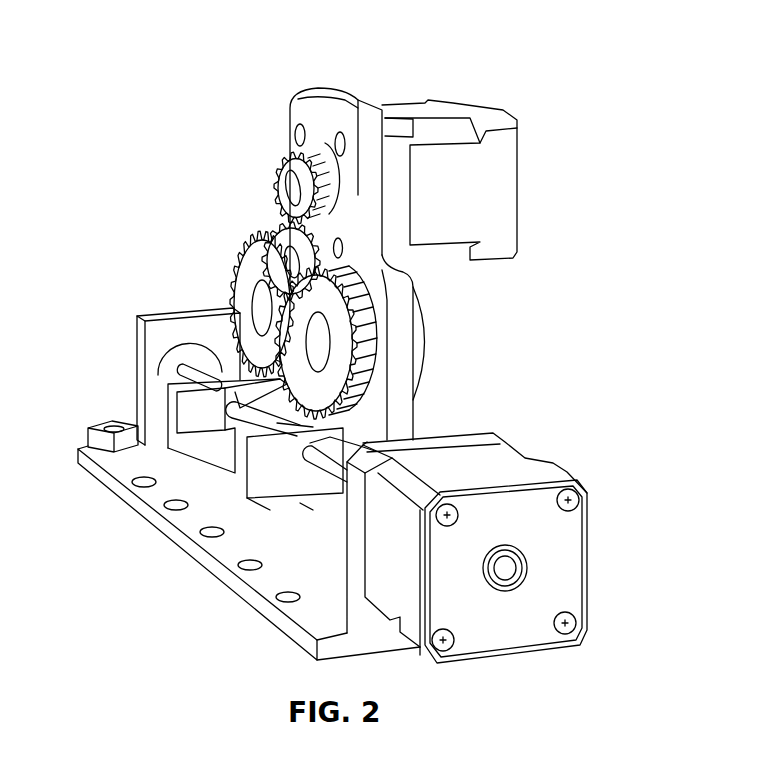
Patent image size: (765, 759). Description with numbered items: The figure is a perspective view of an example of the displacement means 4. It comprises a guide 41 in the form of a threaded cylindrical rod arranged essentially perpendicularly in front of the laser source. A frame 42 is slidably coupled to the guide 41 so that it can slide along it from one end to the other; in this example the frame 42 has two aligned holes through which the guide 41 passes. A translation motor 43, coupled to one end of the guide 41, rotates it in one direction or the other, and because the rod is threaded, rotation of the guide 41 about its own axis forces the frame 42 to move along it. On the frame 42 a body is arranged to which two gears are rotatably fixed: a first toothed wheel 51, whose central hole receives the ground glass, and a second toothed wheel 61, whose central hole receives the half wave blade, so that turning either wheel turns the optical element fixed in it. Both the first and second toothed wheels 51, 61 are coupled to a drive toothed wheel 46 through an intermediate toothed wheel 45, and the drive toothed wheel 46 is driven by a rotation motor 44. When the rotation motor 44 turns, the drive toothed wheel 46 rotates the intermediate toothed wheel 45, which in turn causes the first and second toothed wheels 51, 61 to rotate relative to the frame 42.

The displacement means 4 is at (632, 274).
The guide 41 is at (345, 540).
The frame 42 is at (223, 445).
The translation motor 43 is at (557, 578).
The rotation motor 44 is at (398, 155).
The intermediate toothed wheel 45 is at (285, 236).
The drive toothed wheel 46 is at (293, 177).
The first toothed wheel 51 is at (342, 350).
The second toothed wheel 61 is at (268, 278).